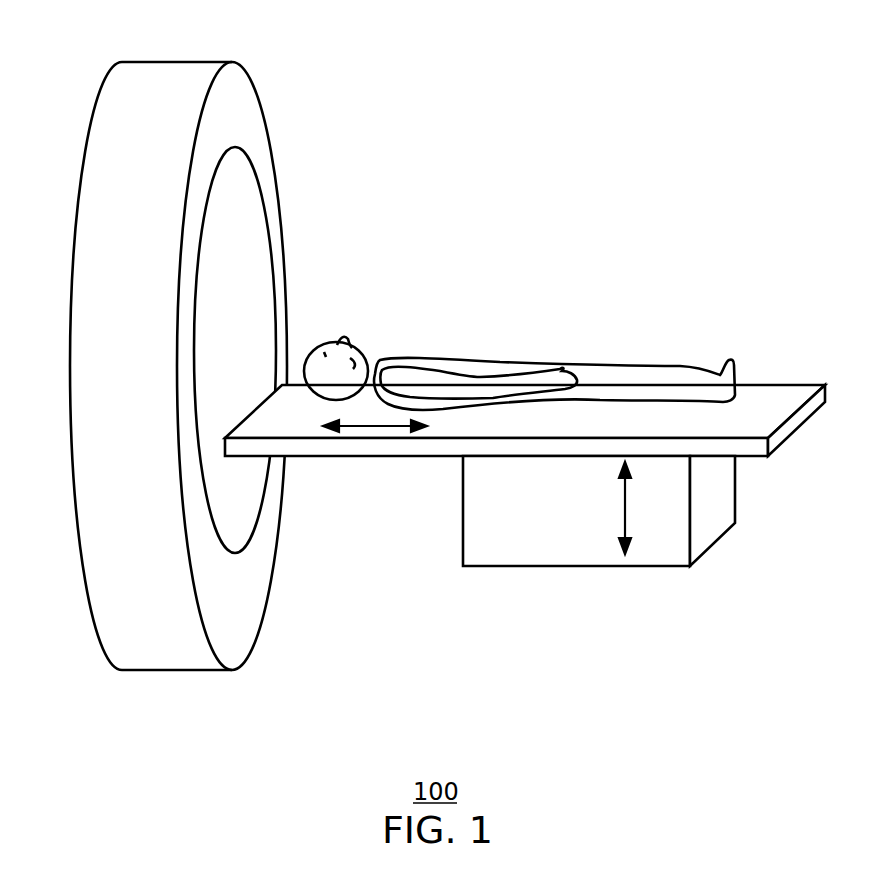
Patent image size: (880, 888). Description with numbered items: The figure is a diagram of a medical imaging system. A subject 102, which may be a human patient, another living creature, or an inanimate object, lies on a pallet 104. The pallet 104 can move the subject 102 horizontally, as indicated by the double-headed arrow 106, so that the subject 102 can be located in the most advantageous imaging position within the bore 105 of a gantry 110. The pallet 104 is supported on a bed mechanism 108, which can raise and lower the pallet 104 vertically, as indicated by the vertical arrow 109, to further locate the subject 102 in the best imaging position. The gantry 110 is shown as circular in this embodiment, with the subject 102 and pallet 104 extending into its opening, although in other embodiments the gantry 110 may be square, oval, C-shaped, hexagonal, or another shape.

The subject 102 is at (413, 357).
The pallet 104 is at (353, 457).
The bore 105 is at (267, 217).
The horizontal movement indication 106 is at (378, 427).
The bed mechanism 108 is at (527, 566).
The vertical table motion 109 is at (625, 502).
The gantry 110 is at (157, 61).